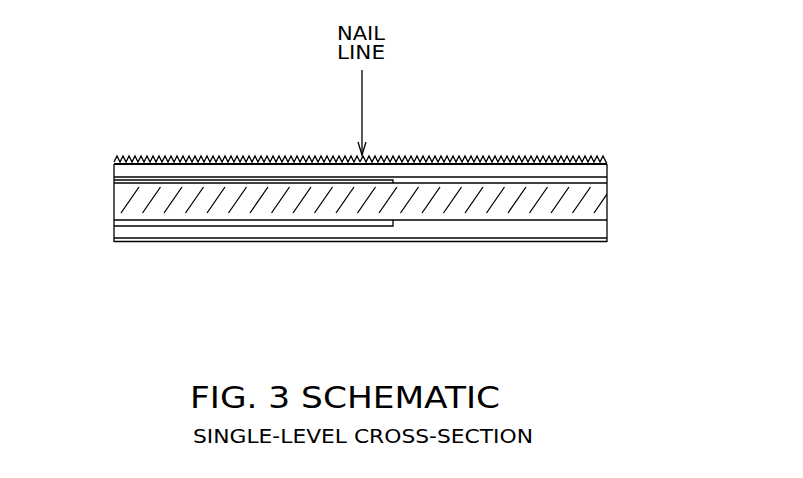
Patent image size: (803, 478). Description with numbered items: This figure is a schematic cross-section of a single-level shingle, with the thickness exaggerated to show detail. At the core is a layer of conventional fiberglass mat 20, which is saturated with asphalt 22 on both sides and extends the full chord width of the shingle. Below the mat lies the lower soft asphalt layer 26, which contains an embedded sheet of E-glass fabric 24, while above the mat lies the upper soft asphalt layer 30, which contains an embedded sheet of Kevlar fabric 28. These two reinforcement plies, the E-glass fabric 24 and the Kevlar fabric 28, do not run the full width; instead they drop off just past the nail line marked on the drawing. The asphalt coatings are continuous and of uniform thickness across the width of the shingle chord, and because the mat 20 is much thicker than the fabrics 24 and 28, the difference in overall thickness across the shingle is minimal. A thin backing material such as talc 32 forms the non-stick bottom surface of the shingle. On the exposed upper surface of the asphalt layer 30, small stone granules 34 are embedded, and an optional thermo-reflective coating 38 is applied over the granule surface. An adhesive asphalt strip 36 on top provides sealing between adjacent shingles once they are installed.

The fiberglass mat 20 is at (363, 250).
The asphalt 22 is at (442, 205).
The E-glass fabric 24 is at (313, 225).
The lower soft asphalt layer 26 is at (247, 232).
The Kevlar fabric 28 is at (299, 181).
The upper soft asphalt layer 30 is at (223, 173).
The talc backing material 32 is at (153, 243).
The stone granules 34 is at (206, 120).
The adhesive asphalt strip 36 is at (370, 158).
The thermo-reflective coating 38 is at (138, 157).